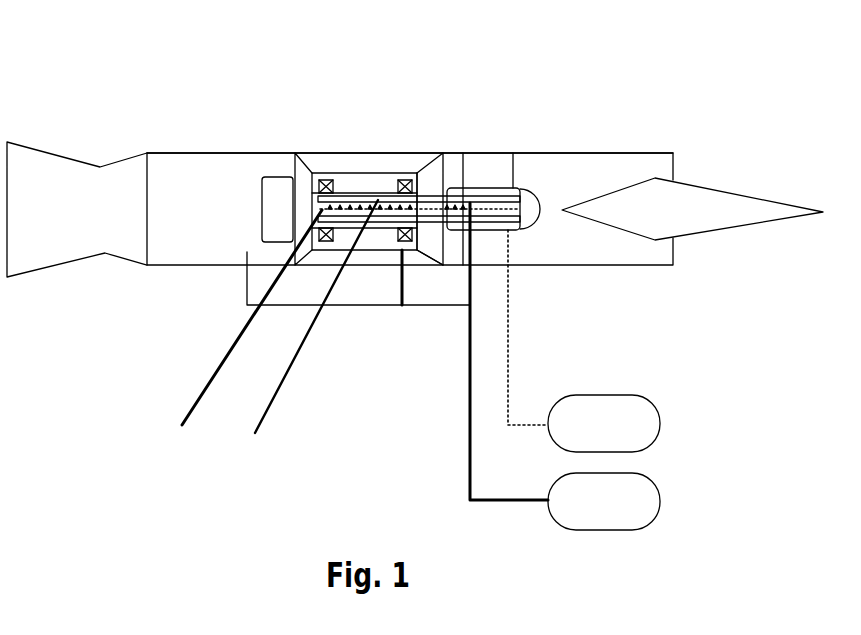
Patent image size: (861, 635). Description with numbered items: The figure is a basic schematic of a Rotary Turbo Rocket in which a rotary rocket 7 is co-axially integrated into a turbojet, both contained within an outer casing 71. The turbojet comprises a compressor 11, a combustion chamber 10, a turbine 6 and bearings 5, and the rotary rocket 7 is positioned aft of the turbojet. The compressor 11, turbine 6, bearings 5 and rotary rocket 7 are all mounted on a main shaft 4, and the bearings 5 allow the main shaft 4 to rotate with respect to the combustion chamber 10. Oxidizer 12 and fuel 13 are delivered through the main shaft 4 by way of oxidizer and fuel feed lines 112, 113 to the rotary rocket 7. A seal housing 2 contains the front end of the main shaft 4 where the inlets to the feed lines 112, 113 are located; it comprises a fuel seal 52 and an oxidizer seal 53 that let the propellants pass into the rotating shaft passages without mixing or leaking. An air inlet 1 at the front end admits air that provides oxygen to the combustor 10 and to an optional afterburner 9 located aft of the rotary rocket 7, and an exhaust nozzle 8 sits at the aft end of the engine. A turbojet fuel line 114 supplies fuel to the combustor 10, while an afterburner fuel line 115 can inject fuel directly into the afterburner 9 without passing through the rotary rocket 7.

The air inlet 1 is at (700, 205).
The seal housing 2 is at (534, 193).
The main shaft 4 is at (382, 195).
The bearings 5 is at (340, 175).
The turbine 6 is at (305, 175).
The rotary rocket 7 is at (277, 190).
The outer casing 71 is at (217, 157).
The exhaust nozzle 8 is at (63, 182).
The afterburner 9 is at (207, 248).
The combustion chamber 10 is at (342, 250).
The compressor 11 is at (428, 238).
The oxidizer 12 is at (584, 341).
The fuel 13 is at (565, 366).
The fuel seal 52 is at (483, 190).
The oxidizer seal 53 is at (517, 190).
The oxidizer feed line 112 is at (232, 338).
The fuel feed line 113 is at (390, 220).
The turbojet fuel line 114 is at (403, 257).
The afterburner fuel line 115 is at (245, 278).